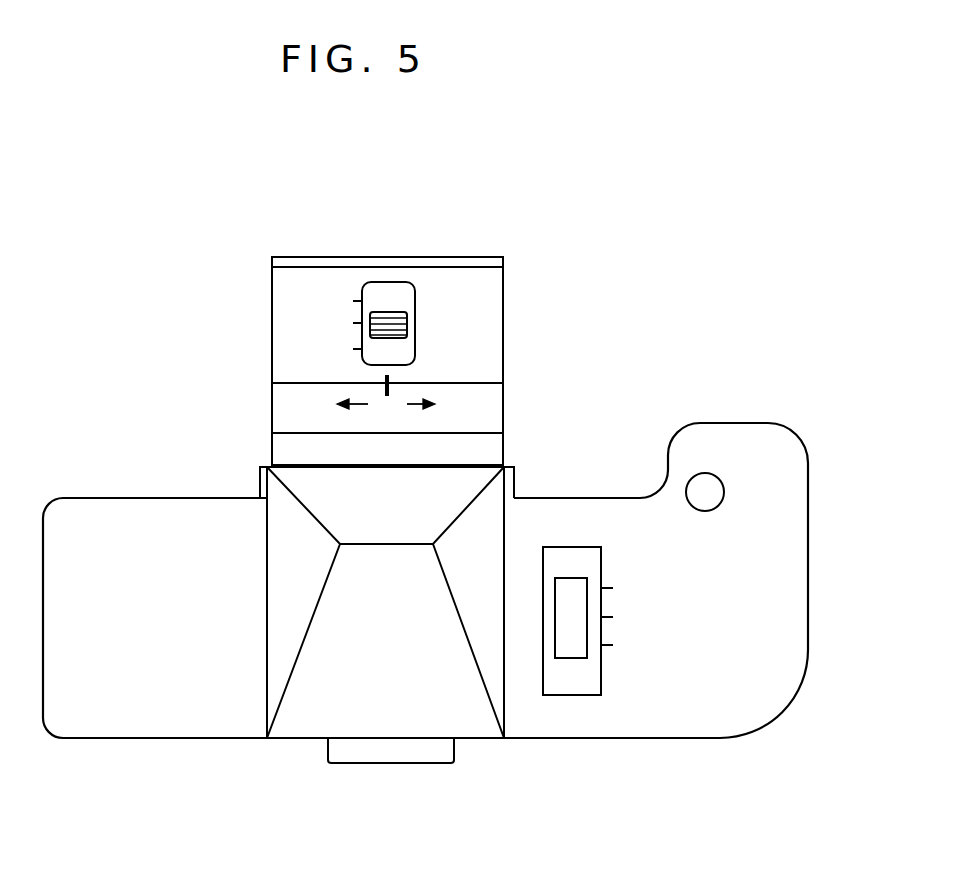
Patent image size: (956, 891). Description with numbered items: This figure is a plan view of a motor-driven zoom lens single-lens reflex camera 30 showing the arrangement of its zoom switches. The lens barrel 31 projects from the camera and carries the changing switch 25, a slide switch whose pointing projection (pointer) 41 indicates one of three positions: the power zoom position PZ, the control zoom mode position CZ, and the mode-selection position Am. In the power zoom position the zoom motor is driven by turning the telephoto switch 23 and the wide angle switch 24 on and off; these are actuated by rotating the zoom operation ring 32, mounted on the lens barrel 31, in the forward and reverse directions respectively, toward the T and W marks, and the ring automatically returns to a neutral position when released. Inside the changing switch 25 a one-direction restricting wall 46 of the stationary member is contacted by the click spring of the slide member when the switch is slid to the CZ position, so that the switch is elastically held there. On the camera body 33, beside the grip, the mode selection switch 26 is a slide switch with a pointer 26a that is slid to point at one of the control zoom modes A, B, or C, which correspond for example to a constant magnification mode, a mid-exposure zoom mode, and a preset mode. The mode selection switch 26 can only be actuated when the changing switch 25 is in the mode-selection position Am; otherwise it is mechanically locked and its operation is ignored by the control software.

The single-lens reflex camera 30 is at (133, 749).
The camera body 33 is at (788, 635).
The lens barrel 31 is at (488, 340).
The changing switch 25 is at (433, 290).
The pointing projection (pointer) 41 is at (395, 270).
The one-direction restricting wall 46 is at (388, 315).
The zoom operation ring 32 is at (467, 384).
The telephoto switch 23 is at (387, 397).
The wide angle switch 24 is at (490, 415).
The mode selection switch 26 is at (617, 625).
The pointer 26a is at (580, 615).